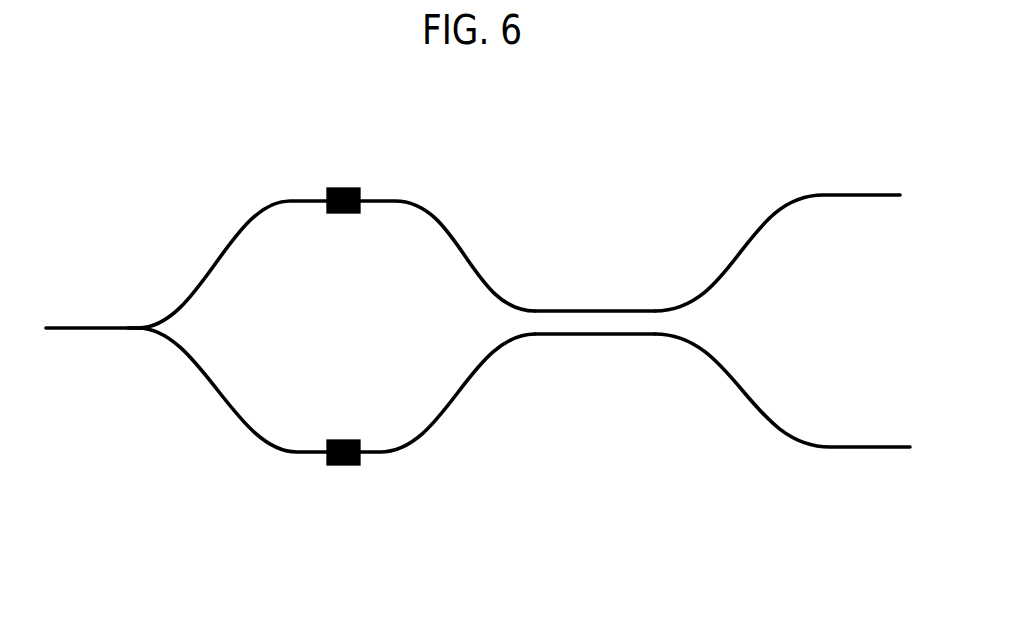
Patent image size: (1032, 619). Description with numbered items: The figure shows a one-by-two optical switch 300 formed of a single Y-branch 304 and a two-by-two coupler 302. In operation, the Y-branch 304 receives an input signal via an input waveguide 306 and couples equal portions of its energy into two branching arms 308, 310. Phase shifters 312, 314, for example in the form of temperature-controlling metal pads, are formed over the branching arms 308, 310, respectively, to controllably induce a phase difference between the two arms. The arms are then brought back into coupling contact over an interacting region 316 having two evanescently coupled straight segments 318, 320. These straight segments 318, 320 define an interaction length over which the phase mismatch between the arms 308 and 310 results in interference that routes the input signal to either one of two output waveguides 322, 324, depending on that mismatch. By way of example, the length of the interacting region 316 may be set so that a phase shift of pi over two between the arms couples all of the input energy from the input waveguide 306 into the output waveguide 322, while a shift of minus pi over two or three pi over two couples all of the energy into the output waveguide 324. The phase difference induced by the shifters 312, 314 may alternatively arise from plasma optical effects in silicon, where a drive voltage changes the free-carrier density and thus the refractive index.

The 1×2 switch 300 is at (623, 164).
The 2×2 coupler 302 is at (604, 361).
The Y-branch 304 is at (134, 338).
The input waveguide 306 is at (100, 326).
The branching arm 308 is at (221, 260).
The branching arm 310 is at (213, 390).
The phase shifter 312 is at (345, 213).
The phase shifter 314 is at (345, 466).
The interacting region 316 is at (538, 300).
The straight segment 318 is at (572, 310).
The straight segment 320 is at (648, 362).
The output waveguide 322 is at (832, 193).
The output waveguide 324 is at (843, 450).